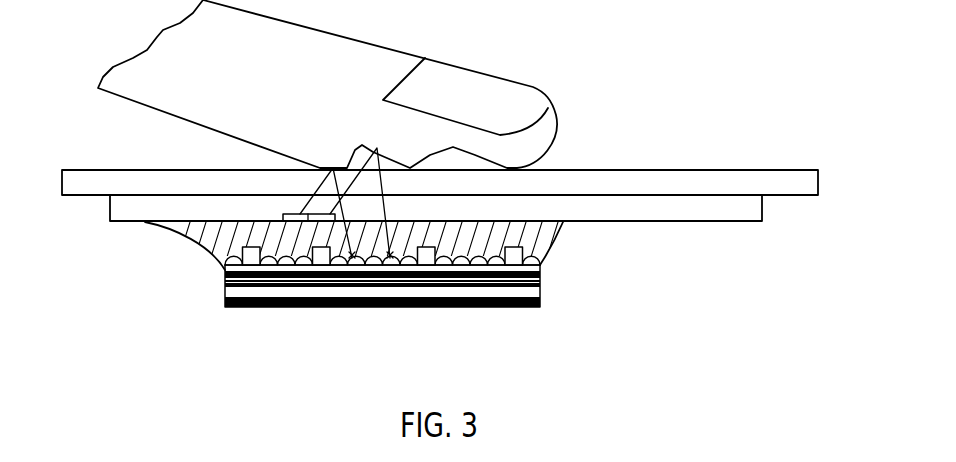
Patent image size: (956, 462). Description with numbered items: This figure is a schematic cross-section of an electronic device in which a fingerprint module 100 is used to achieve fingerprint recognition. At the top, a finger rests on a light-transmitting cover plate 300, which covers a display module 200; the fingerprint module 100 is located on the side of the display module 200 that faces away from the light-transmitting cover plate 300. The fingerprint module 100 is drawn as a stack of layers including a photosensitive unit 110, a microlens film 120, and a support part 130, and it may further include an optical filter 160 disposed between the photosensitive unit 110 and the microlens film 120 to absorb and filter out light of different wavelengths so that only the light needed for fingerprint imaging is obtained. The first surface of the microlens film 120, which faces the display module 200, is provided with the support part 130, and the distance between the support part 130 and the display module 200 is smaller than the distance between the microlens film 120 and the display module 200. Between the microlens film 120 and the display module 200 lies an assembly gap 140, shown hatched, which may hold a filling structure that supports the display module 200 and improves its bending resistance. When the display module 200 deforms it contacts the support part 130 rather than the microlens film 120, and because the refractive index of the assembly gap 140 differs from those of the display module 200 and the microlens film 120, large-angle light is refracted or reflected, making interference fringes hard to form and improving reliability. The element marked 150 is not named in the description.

The fingerprint module 100 is at (476, 296).
The photosensitive unit 110 is at (541, 292).
The microlens film 120 is at (541, 268).
The support part 130 is at (541, 257).
The assembly gap 140 is at (183, 240).
The microstructure layer 150 is at (545, 242).
The optical filter 160 is at (541, 278).
The display module 200 is at (700, 210).
The light-transmitting cover plate 300 is at (627, 183).